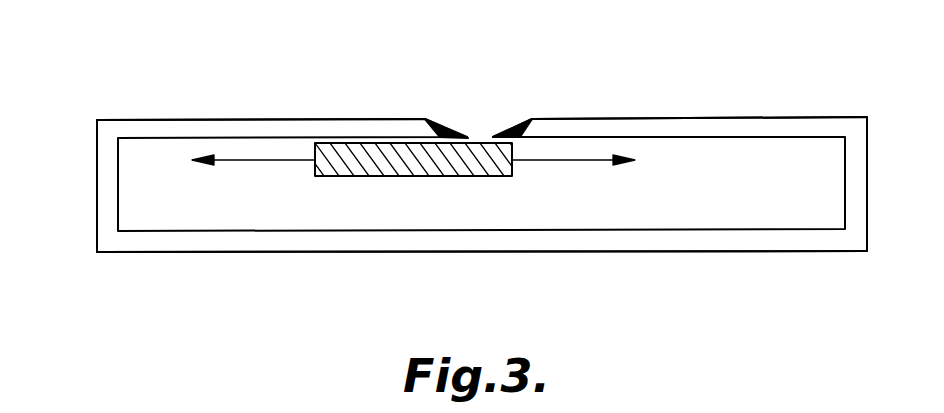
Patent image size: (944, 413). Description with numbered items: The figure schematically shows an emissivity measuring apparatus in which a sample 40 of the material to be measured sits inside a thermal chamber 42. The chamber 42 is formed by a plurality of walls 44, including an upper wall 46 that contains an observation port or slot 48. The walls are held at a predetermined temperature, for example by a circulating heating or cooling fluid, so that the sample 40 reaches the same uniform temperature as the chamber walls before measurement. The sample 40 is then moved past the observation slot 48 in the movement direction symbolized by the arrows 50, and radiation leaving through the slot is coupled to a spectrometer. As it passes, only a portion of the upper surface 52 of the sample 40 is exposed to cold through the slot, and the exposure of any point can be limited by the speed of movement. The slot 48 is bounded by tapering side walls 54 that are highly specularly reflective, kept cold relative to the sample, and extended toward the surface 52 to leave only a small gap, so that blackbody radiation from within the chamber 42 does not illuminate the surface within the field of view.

The sample 40 is at (424, 177).
The thermal chamber 42 is at (97, 160).
The walls 44 is at (220, 253).
The upper wall 46 is at (215, 120).
The observation slot 48 is at (478, 136).
The arrows 50 is at (258, 163).
The upper surface 52 is at (468, 137).
The tapering side walls 54 is at (443, 124).